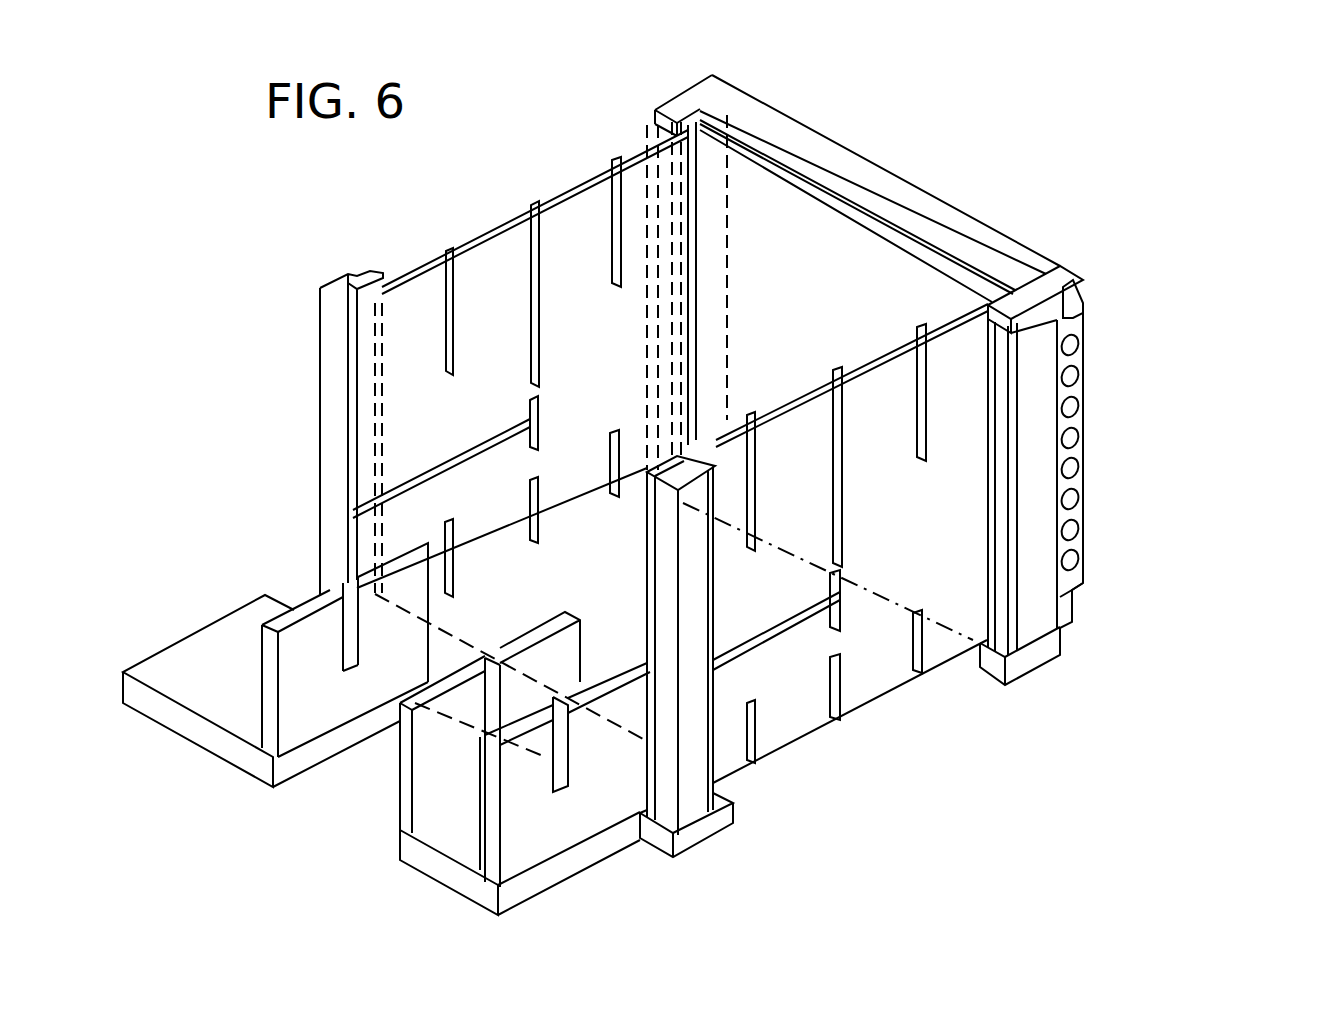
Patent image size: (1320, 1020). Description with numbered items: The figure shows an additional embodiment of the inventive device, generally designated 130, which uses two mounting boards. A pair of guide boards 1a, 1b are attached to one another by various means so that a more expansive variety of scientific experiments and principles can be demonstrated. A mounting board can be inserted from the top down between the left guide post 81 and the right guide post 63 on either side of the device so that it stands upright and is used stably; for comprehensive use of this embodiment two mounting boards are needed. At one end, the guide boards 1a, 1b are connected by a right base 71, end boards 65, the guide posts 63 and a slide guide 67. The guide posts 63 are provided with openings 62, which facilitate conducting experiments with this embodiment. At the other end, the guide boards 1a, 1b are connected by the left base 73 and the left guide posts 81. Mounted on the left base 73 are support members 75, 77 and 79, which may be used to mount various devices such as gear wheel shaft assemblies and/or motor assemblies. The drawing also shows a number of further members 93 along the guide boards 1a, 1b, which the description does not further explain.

The additional embodiment of the inventive device 130 is at (1183, 643).
The openings 62 is at (1086, 438).
The guide posts 63 is at (697, 103).
The end boards 65 is at (874, 228).
The slide guide 67 is at (1076, 300).
The right base 71 is at (1031, 662).
The left base 73 is at (713, 828).
The support member 75 is at (520, 863).
The support member 77 is at (525, 749).
The support member 79 is at (275, 665).
The left guide posts 81 is at (331, 543).
The hanging slat 93 is at (539, 272).
The guide board 1a is at (520, 359).
The guide board 1b is at (850, 543).